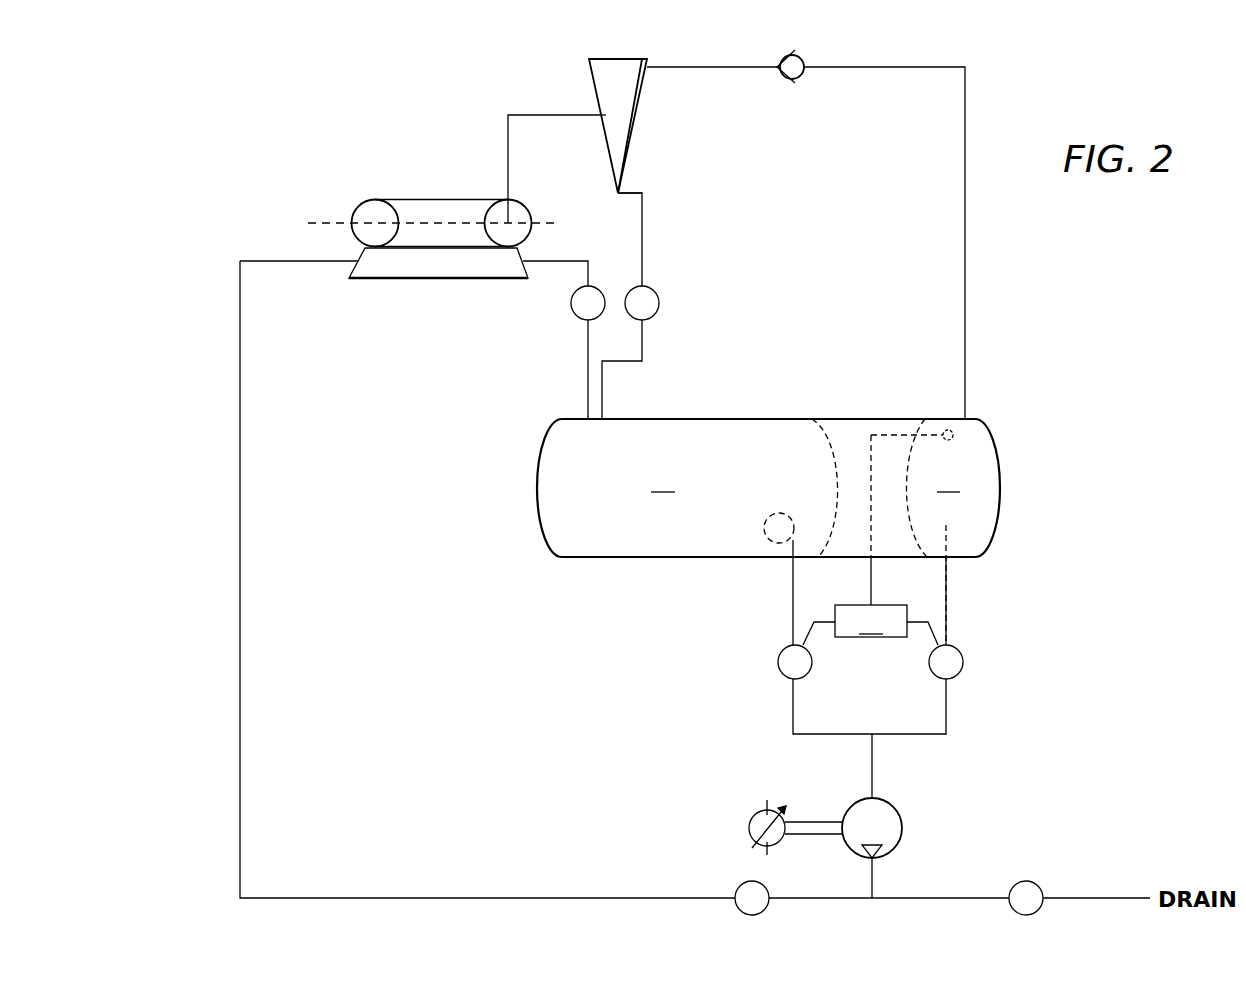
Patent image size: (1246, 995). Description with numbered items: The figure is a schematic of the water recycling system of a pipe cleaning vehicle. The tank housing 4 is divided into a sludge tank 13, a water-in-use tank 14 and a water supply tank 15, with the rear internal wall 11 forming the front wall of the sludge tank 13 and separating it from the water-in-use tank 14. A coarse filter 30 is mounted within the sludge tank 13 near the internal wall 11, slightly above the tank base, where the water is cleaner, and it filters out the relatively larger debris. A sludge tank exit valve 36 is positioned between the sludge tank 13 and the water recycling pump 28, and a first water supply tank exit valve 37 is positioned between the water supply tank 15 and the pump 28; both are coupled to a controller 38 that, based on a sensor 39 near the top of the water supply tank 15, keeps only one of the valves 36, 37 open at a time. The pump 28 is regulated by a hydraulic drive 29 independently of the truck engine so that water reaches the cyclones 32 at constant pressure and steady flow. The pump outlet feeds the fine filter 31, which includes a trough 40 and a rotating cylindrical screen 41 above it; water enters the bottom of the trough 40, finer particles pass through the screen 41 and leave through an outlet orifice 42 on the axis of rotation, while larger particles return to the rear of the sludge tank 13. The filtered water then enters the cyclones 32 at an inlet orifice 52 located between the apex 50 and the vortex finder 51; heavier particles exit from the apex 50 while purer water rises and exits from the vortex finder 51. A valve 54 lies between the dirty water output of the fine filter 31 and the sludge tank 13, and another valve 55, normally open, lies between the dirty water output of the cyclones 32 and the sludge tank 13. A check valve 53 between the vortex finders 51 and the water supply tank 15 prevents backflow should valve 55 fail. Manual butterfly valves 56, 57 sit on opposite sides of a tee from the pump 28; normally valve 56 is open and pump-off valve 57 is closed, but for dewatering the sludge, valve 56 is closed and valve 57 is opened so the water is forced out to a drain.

The tank housing 4 is at (998, 463).
The rear internal wall 11 is at (840, 425).
The sludge tank 13 is at (663, 480).
The water-in-use tank 14 is at (860, 435).
The water supply tank 15 is at (948, 480).
The water recycling pump 28 is at (925, 824).
The hydraulic drive 29 is at (758, 815).
The coarse filter 30 is at (764, 545).
The fine filter 31 is at (439, 226).
The cyclones 32 is at (591, 70).
The sludge tank exit valve 36 is at (778, 662).
The first water supply tank exit valve 37 is at (963, 662).
The controller 38 is at (870, 625).
The sensor 39 is at (953, 435).
The trough 40 is at (443, 277).
The rotating cylindrical screen 41 is at (458, 170).
The outlet orifice 42 is at (508, 223).
The apex 50 is at (626, 192).
The vortex finder 51 is at (626, 59).
The inlet orifice 52 is at (607, 115).
The check valve 53 is at (800, 77).
The valve 54 is at (578, 313).
The valve 55 is at (654, 315).
The valve 56 is at (745, 886).
The pump-off valve 57 is at (1036, 883).